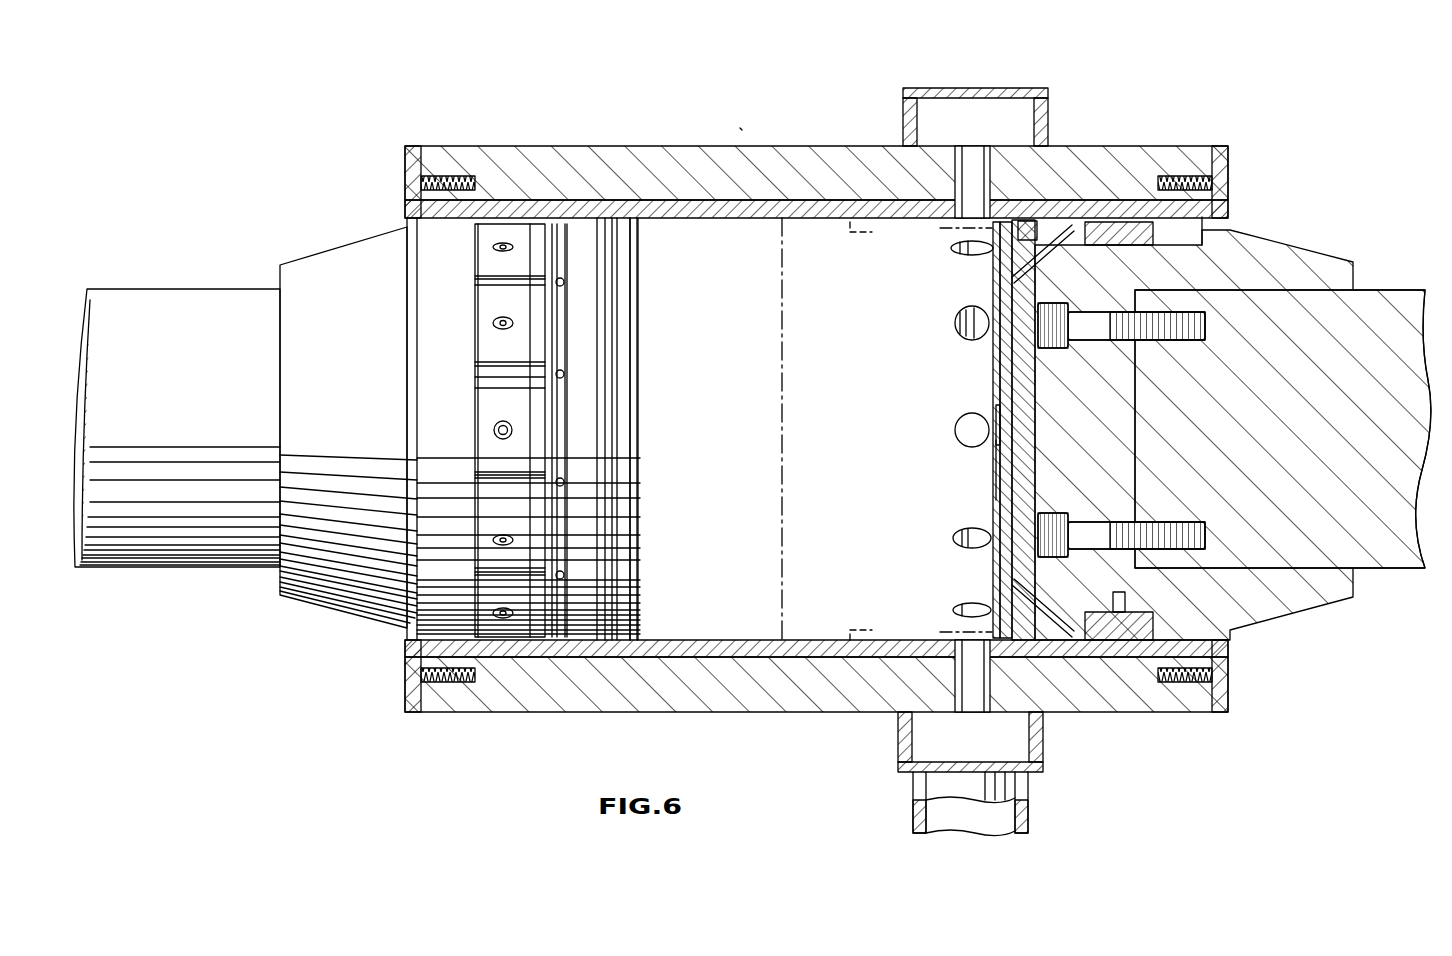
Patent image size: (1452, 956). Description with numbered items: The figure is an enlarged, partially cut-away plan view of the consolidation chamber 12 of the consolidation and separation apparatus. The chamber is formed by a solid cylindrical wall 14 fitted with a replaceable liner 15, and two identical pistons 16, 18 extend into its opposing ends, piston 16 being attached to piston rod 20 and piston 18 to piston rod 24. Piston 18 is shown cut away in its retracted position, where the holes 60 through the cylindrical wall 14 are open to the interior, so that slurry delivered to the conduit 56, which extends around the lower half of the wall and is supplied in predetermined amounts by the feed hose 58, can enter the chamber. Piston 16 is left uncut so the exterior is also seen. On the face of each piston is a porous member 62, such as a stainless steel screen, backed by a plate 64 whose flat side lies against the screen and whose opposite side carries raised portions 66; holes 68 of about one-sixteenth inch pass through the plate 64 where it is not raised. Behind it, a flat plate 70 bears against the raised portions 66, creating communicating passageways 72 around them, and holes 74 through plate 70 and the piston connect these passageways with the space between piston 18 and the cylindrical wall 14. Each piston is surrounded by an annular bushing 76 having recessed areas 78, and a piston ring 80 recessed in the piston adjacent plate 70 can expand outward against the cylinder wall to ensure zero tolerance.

The consolidation chamber 12 is at (742, 128).
The cylindrical wall 14 is at (580, 156).
The liner 15 is at (724, 212).
The piston 16 is at (310, 262).
The piston 18 is at (1262, 254).
The piston rod 20 is at (203, 296).
The piston rod 24 is at (1320, 300).
The conduit 56 is at (1043, 738).
The feed hose 58 is at (913, 802).
The holes 60 is at (953, 538).
The porous member 62 is at (996, 445).
The plate 64 is at (1002, 400).
The raised portions 66 is at (996, 360).
The holes 68 is at (1003, 305).
The flat plate 70 is at (1032, 486).
The communicating passageways 72 is at (1000, 482).
The holes 74 is at (563, 285).
The annular bushing 76 is at (475, 408).
The recessed areas 78 is at (478, 360).
The piston ring 80 is at (1008, 222).